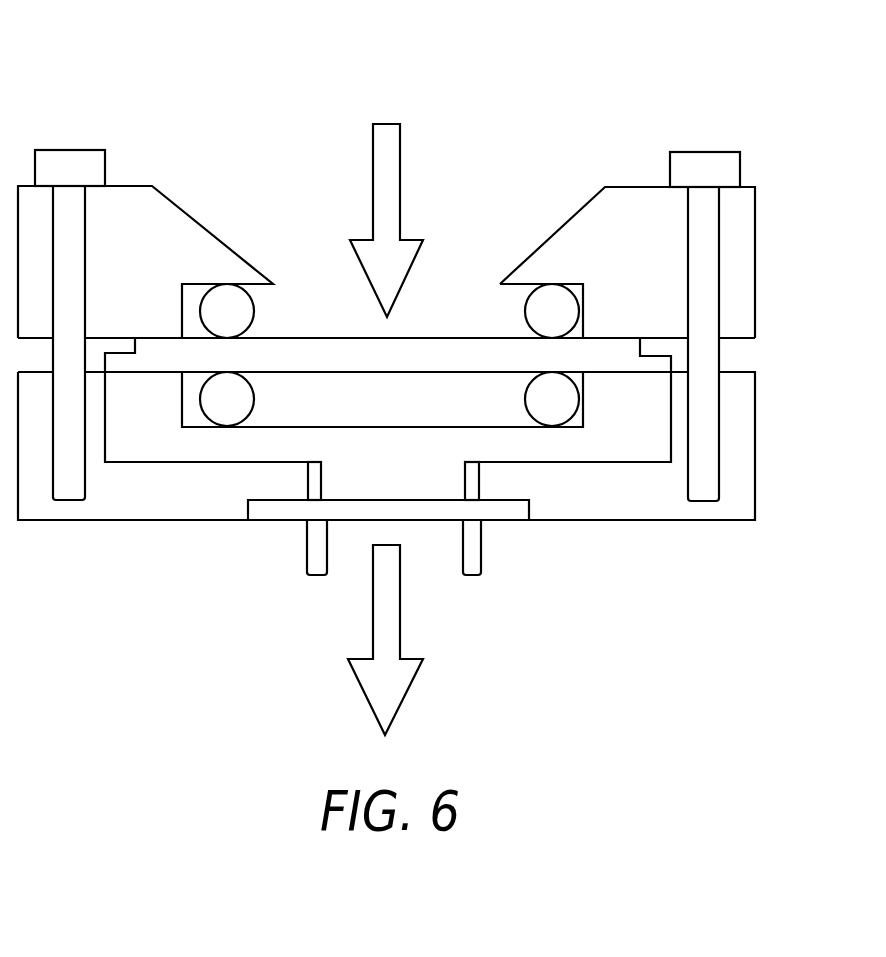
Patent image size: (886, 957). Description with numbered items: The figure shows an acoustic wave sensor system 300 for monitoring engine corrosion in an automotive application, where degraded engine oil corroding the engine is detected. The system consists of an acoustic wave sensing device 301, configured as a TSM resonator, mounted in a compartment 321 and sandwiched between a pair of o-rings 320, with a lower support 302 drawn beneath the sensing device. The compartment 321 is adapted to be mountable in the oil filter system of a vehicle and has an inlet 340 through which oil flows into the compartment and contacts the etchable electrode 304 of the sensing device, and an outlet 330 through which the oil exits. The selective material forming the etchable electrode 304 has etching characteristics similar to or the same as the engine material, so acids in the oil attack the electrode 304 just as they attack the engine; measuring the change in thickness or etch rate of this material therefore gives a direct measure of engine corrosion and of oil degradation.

The sensor system 300 is at (747, 83).
The acoustic wave sensing device 301 is at (590, 318).
The lower support cavity 302 is at (300, 373).
The etchable electrode 304 is at (432, 332).
The o-rings 320 is at (590, 400).
The compartment 321 is at (632, 495).
The outlet 330 is at (440, 568).
The inlet 340 is at (475, 208).